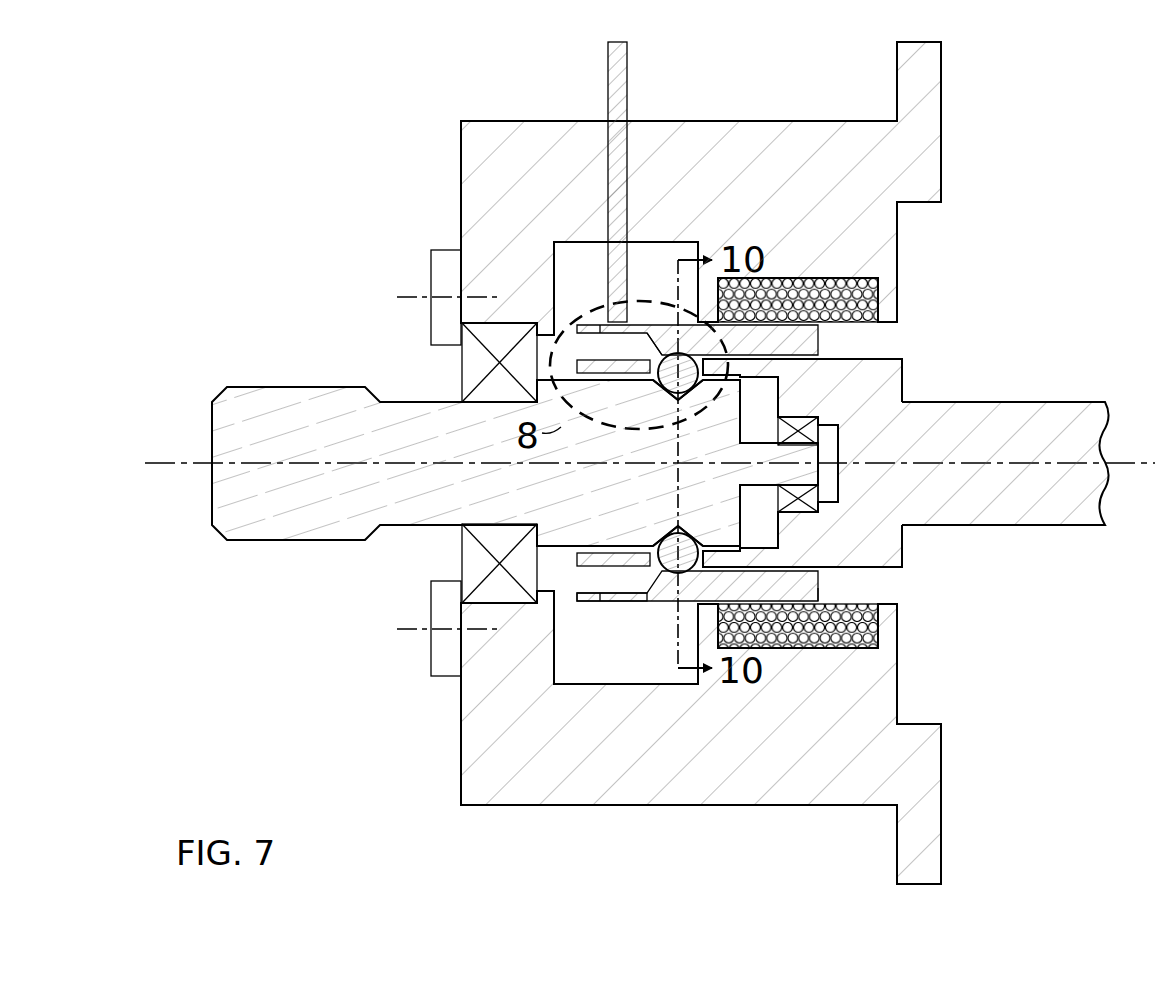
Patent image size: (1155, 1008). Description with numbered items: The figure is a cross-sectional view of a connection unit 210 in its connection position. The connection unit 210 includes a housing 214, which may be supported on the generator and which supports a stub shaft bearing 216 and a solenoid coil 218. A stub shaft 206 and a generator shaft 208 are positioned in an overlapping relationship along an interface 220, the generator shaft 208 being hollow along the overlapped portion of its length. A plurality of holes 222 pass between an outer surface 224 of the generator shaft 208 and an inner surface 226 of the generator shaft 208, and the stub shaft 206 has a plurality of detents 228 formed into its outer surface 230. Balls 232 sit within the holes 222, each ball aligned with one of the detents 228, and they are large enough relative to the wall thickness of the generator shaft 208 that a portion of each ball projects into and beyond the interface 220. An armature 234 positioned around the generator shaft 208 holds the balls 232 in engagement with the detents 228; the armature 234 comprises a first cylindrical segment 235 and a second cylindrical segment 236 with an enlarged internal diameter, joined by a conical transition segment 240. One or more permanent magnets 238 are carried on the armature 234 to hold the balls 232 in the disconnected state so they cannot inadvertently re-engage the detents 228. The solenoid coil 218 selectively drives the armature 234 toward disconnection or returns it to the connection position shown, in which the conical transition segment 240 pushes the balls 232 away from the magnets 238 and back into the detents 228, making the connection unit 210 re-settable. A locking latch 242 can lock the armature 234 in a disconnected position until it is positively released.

The stub shaft 206 is at (376, 540).
The generator shaft 208 is at (1032, 402).
The connection unit 210 is at (340, 182).
The housing 214 is at (461, 182).
The stub shaft bearing 216 is at (461, 548).
The solenoid coil 218 is at (795, 286).
The interface 220 is at (764, 310).
The holes 222 is at (711, 377).
The outer surface 224 is at (900, 358).
The inner surface 226 is at (770, 366).
The detents 228 is at (665, 381).
The outer surface 230 is at (541, 376).
The balls 232 is at (668, 395).
The armature 234 is at (786, 586).
The first cylindrical segment 235 is at (818, 588).
The second cylindrical segment 236 is at (604, 596).
The permanent magnets 238 is at (590, 329).
The conical transition segment 240 is at (652, 344).
The locking latch 242 is at (627, 87).